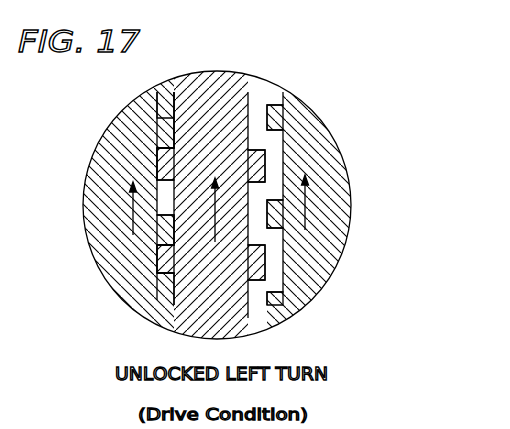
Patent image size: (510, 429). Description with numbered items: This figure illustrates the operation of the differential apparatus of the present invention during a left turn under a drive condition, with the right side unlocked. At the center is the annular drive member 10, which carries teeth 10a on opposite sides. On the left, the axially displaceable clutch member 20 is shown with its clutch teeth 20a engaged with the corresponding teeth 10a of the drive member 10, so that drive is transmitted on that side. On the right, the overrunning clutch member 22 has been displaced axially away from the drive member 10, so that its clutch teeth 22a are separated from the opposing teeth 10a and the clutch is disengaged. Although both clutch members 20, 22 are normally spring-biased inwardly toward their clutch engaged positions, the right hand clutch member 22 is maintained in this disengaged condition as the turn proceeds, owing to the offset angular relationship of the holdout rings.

The annular drive member 10 is at (230, 97).
The teeth 10a is at (256, 150).
The clutch member 20 is at (157, 149).
The clutch teeth 20a is at (160, 132).
The clutch member 22 is at (290, 160).
The clutch teeth 22a is at (283, 100).